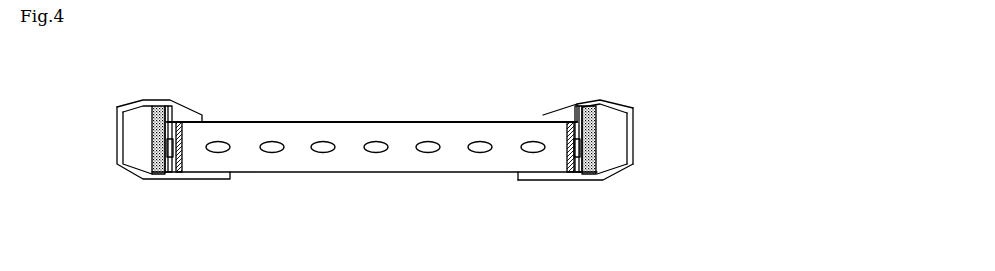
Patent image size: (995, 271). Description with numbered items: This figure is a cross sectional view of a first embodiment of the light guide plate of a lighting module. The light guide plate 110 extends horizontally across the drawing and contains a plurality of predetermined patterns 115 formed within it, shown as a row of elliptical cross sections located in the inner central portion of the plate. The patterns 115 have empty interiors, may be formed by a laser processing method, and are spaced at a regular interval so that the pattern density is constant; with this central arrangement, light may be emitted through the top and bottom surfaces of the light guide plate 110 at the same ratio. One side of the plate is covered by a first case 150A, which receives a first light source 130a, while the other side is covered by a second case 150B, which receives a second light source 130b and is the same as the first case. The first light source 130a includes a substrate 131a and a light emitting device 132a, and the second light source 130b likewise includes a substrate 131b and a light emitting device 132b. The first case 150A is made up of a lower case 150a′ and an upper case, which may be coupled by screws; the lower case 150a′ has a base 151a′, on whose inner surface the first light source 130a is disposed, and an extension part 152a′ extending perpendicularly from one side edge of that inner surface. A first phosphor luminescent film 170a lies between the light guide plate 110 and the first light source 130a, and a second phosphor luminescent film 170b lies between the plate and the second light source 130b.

The light guide plate 110 is at (374, 152).
The predetermined pattern 115 is at (376, 141).
The first light source 130a is at (585, 177).
The second light source 130b is at (176, 178).
The substrate 131a is at (590, 175).
The substrate 131b is at (157, 175).
The light emitting device 132a is at (566, 163).
The light emitting device 132b is at (168, 173).
The first case 150A is at (651, 158).
The second case 150B is at (136, 156).
The lower case 150a′ is at (628, 188).
The base 151a′ is at (614, 170).
The extension part 152a′ is at (605, 180).
The first phosphor luminescent film 170a is at (571, 121).
The second phosphor luminescent film 170b is at (178, 121).